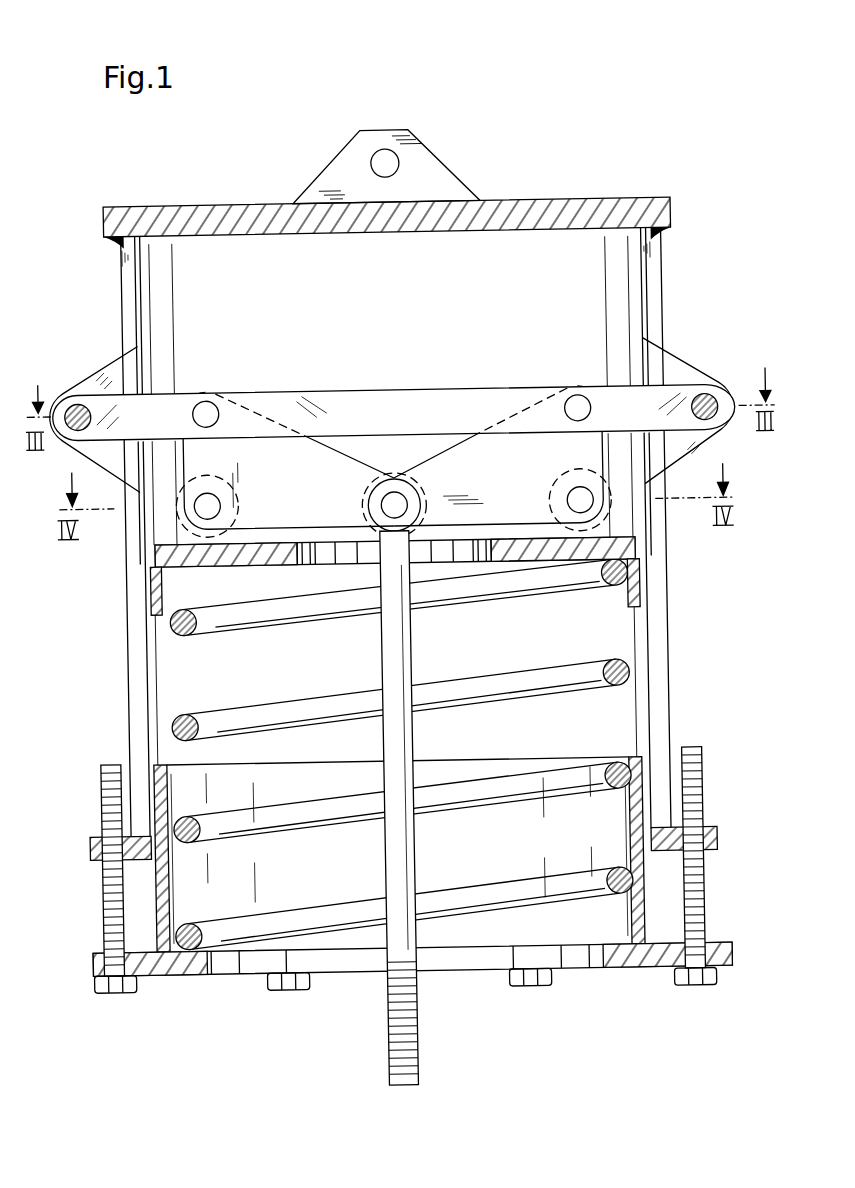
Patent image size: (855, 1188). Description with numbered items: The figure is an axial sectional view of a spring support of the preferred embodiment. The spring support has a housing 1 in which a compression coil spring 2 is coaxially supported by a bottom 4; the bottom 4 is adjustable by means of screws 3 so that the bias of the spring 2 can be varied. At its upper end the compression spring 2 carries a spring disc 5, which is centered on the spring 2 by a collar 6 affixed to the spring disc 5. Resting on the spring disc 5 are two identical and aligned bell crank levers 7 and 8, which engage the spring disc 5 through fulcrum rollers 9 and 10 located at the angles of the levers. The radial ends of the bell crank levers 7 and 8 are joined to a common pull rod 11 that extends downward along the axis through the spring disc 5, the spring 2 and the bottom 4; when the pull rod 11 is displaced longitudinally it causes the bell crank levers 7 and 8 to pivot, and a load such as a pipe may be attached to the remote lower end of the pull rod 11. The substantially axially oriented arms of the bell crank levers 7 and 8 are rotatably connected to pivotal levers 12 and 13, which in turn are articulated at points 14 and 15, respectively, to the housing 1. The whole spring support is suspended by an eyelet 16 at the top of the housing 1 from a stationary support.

The housing 1 is at (668, 714).
The compression spring 2 is at (605, 667).
The screws 3 is at (98, 903).
The bottom 4 is at (634, 972).
The spring disc 5 is at (627, 552).
The collar 6 is at (648, 602).
The bell crank lever 7 is at (259, 479).
The bell crank lever 8 is at (504, 478).
The fulcrum roller 9 is at (192, 519).
The fulcrum roller 10 is at (607, 512).
The pull rod 11 is at (412, 1022).
The pivotal lever 12 is at (418, 390).
The pivotal lever 13 is at (179, 394).
The articulation 14 is at (702, 399).
The articulation 15 is at (81, 399).
The eyelet 16 is at (382, 154).